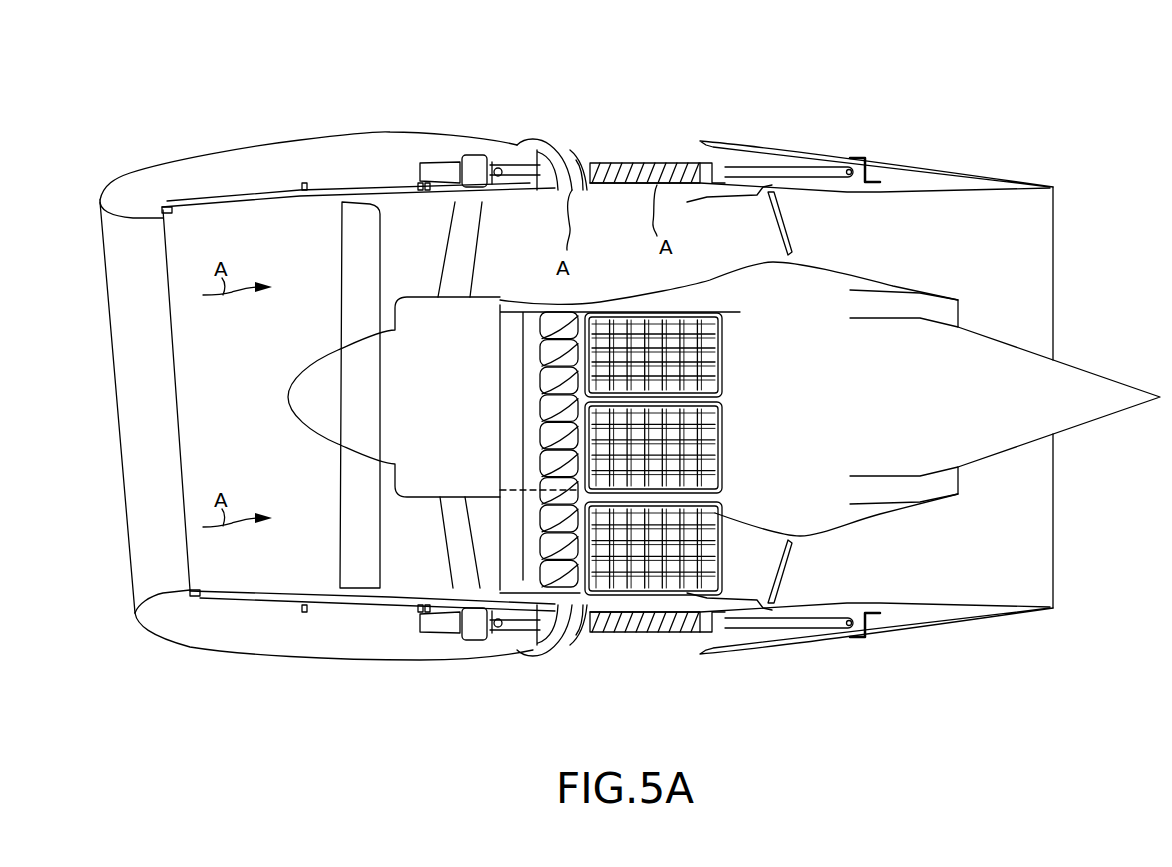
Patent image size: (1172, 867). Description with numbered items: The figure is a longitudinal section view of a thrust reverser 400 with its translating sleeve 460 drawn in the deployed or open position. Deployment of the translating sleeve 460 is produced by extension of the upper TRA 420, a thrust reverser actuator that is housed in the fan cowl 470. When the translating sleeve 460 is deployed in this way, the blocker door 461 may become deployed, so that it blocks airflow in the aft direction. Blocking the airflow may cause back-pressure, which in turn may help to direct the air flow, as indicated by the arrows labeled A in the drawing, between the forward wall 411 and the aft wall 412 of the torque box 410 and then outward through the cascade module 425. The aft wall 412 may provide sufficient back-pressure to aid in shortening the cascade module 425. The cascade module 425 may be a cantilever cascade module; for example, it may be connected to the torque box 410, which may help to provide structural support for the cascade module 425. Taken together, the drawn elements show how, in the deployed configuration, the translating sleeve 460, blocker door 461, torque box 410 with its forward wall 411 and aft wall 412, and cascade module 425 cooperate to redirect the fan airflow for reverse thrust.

The thrust reverser 400 is at (848, 69).
The fan cowl 470 is at (200, 167).
The upper TRA 420 is at (437, 170).
The torque box 410 is at (561, 421).
The forward wall 411 is at (530, 650).
The aft wall 412 is at (577, 638).
The cascade module 425 is at (630, 162).
The blocker door 461 is at (770, 192).
The translating sleeve 460 is at (892, 167).